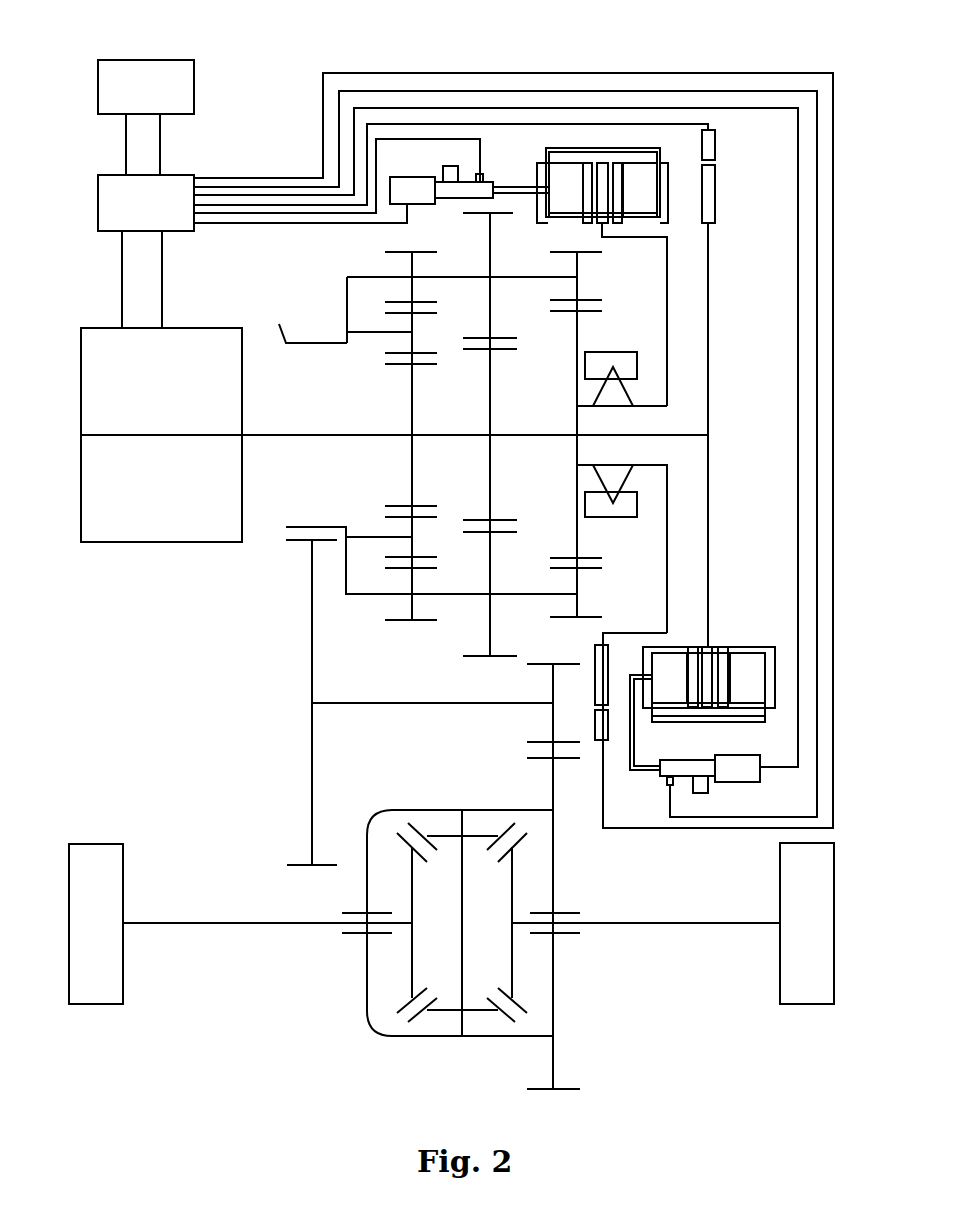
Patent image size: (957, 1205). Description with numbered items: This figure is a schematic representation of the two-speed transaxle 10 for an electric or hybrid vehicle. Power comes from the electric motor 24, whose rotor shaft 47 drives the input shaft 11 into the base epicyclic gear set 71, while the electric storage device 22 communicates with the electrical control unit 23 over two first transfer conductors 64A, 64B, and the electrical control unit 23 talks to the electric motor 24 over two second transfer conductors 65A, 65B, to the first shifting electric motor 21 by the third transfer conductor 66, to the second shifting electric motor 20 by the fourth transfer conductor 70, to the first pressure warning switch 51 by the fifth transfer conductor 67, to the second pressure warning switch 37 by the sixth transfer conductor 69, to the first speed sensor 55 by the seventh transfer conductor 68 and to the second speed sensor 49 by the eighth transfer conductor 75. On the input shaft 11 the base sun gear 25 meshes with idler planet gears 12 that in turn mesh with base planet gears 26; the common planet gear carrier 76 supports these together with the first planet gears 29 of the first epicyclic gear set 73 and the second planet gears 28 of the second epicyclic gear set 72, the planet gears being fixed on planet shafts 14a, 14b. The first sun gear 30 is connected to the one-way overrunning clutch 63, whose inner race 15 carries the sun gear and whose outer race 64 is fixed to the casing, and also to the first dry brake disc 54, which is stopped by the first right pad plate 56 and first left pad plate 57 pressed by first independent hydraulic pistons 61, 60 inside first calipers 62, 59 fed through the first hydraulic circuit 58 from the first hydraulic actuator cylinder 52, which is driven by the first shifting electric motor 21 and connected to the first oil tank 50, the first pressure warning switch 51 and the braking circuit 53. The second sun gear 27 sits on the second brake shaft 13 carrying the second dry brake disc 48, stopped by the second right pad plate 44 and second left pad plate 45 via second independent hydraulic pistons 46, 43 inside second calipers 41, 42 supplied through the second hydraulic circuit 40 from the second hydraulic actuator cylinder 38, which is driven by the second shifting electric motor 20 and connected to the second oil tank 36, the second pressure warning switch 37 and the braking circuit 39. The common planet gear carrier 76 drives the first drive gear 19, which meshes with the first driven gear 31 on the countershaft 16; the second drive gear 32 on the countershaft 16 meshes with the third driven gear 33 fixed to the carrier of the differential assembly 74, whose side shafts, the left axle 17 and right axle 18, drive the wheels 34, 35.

The two-speed transaxle 10 is at (298, 56).
The input shaft 11 is at (326, 435).
The idler planet gears 12 is at (412, 338).
The second brake shaft 13 is at (534, 434).
The planet shafts 14a is at (542, 594).
The connecting shaft portion 14b is at (346, 537).
The inner race 15 is at (658, 404).
The countershaft 16 is at (384, 703).
The left axle 17 is at (229, 923).
The right axle 18 is at (706, 923).
The first drive gear 19 is at (309, 319).
The second shifting electric motor 20 is at (751, 780).
The first shifting electric motor 21 is at (426, 202).
The electric storage device 22 is at (160, 102).
The electrical control unit 23 is at (160, 217).
The electric motor 24 is at (175, 417).
The base sun gear 25 is at (412, 420).
The base planet gears 26 is at (412, 587).
The second sun gear 27 is at (490, 418).
The second planet gears 28 is at (490, 588).
The first planet gears 29 is at (578, 588).
The first sun gear 30 is at (575, 500).
The first driven gear 31 is at (312, 665).
The second drive gear 32 is at (553, 718).
The third driven gear 33 is at (553, 1045).
The wheel 34 is at (110, 933).
The wheel 35 is at (821, 933).
The second oil tank 36 is at (708, 790).
The second pressure warning switch 37 is at (667, 782).
The second hydraulic actuator cylinder 38 is at (706, 760).
The braking circuit 39 is at (634, 749).
The second hydraulic circuit 40 is at (732, 722).
The second caliper 41 is at (643, 663).
The second caliper 42 is at (775, 675).
The second independent hydraulic pistons 43 is at (760, 650).
The second right pad plate 44 is at (726, 647).
The second left pad plate 45 is at (705, 647).
The second independent hydraulic pistons 46 is at (660, 653).
The rotor shaft 47 is at (153, 437).
The second dry brake disc 48 is at (716, 206).
The second speed sensor 49 is at (716, 152).
The first oil tank 50 is at (445, 170).
The first pressure warning switch 51 is at (485, 178).
The first hydraulic actuator cylinder 52 is at (456, 199).
The braking circuit 53 is at (523, 196).
The first dry brake disc 54 is at (595, 665).
The first speed sensor 55 is at (598, 720).
The first right pad plate 56 is at (614, 165).
The first left pad plate 57 is at (589, 165).
The first hydraulic circuit 58 is at (652, 150).
The first caliper 59 is at (660, 228).
The first independent hydraulic pistons 60 is at (637, 170).
The first independent hydraulic pistons 61 is at (556, 170).
The first caliper 62 is at (548, 225).
The one-way overrunning clutch 63 is at (612, 465).
The outer race 64 is at (624, 518).
The first transfer conductor 64A is at (126, 148).
The first transfer conductor 64B is at (160, 150).
The second transfer conductor 65A is at (122, 278).
The second transfer conductor 65B is at (162, 280).
The third transfer conductor 66 is at (377, 225).
The fifth transfer conductor 67 is at (307, 218).
The seventh transfer conductor 68 is at (323, 108).
The sixth transfer conductor 69 is at (338, 140).
The fourth transfer conductor 70 is at (798, 335).
The base epicyclic gear set 71 is at (396, 502).
The second epicyclic gear set 72 is at (486, 502).
The first epicyclic gear set 73 is at (566, 386).
The differential assembly 74 is at (380, 805).
The eighth transfer conductor 75 is at (297, 205).
The common planet gear carrier 76 is at (347, 312).